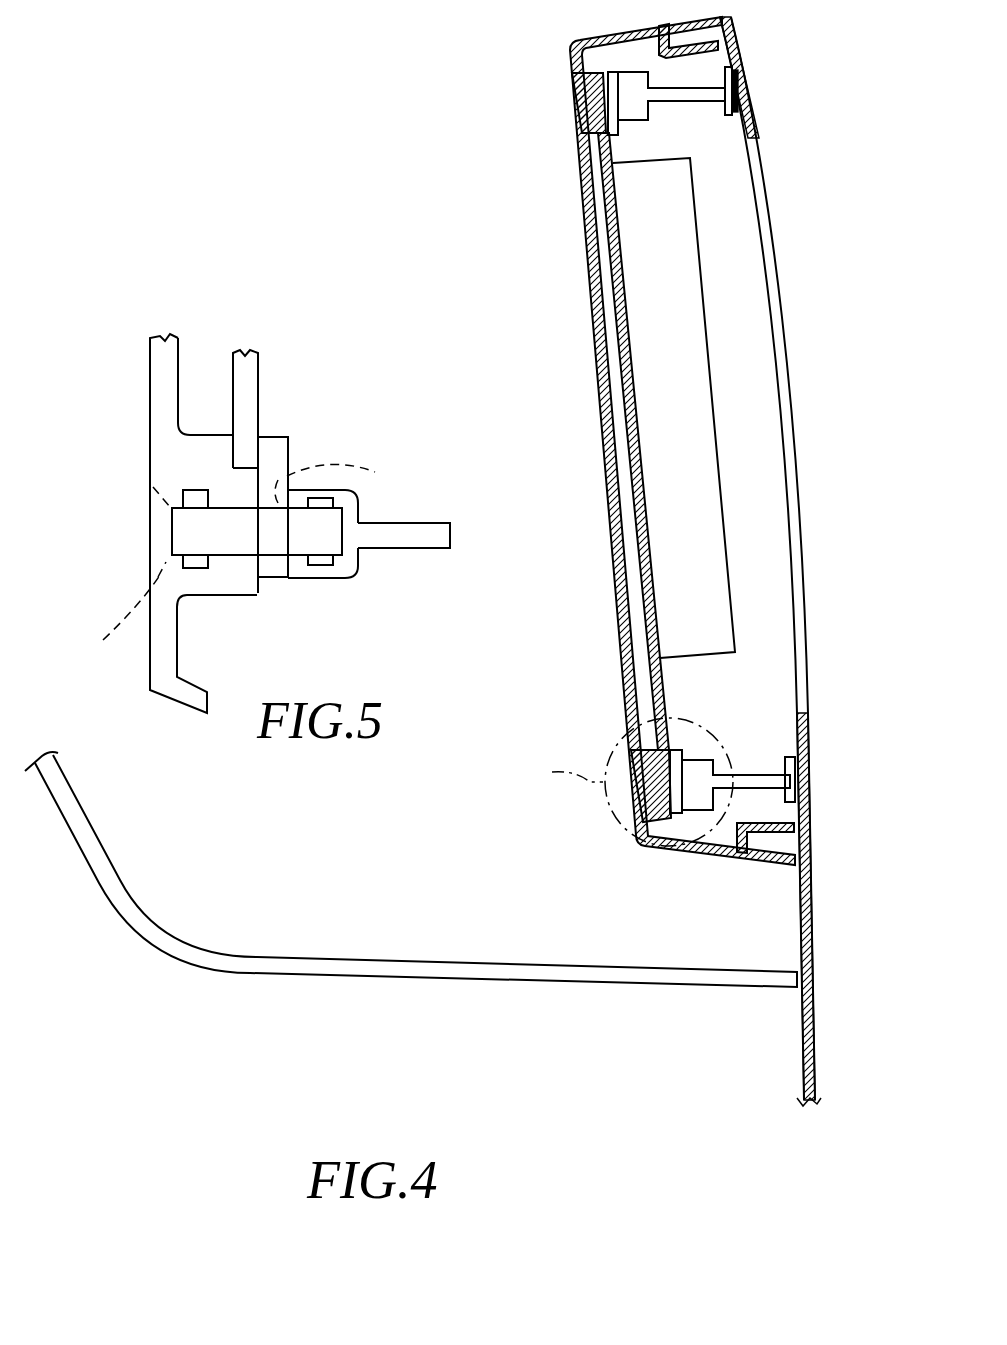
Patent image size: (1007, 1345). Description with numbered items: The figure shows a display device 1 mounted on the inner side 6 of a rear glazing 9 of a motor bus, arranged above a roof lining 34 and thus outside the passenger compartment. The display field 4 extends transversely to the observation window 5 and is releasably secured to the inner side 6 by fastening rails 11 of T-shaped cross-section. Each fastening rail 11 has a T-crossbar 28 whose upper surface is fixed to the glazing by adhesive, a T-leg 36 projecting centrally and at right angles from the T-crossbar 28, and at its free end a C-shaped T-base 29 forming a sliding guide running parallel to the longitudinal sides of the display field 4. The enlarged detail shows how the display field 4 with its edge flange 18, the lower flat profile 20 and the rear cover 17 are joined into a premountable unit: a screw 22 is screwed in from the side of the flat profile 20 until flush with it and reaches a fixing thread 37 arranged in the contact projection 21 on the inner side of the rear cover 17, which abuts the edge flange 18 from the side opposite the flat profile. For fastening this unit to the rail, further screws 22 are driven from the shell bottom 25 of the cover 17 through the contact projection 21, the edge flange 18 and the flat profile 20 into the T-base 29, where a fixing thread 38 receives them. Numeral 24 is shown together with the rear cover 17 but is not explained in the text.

In FIG. 4, the display device 1 is at (645, 561).
In FIG. 4, the display field 4 is at (712, 328).
In FIG. 4, the observation window 5 is at (793, 561).
In FIG. 4, the inner side 6 is at (782, 513).
In FIG. 4, the rear glazing 9 is at (807, 561).
In FIG. 5, the fastening rail 11 is at (437, 517).
In FIG. 5, the rear cover 17 is at (170, 483).
In FIG. 5, the mounting plate flange 24 is at (145, 420).
In FIG. 5, the edge flange 18 is at (250, 405).
In FIG. 5, the lower flat profile 20 is at (332, 542).
In FIG. 5, the contact projection 21 is at (262, 578).
In FIG. 5, the screw 22 is at (246, 567).
In FIG. 5, the shell bottom 25 is at (165, 372).
In FIG. 4, the T-crossbar 28 is at (743, 88).
In FIG. 5, the T-base 29 is at (315, 568).
In FIG. 4, the roof lining 34 is at (600, 973).
In FIG. 4, the T-leg 36 is at (760, 777).
In FIG. 5, the T-leg 36 is at (434, 527).
In FIG. 5, the fixing thread 37 is at (200, 562).
In FIG. 5, the fixing thread 38 is at (327, 565).